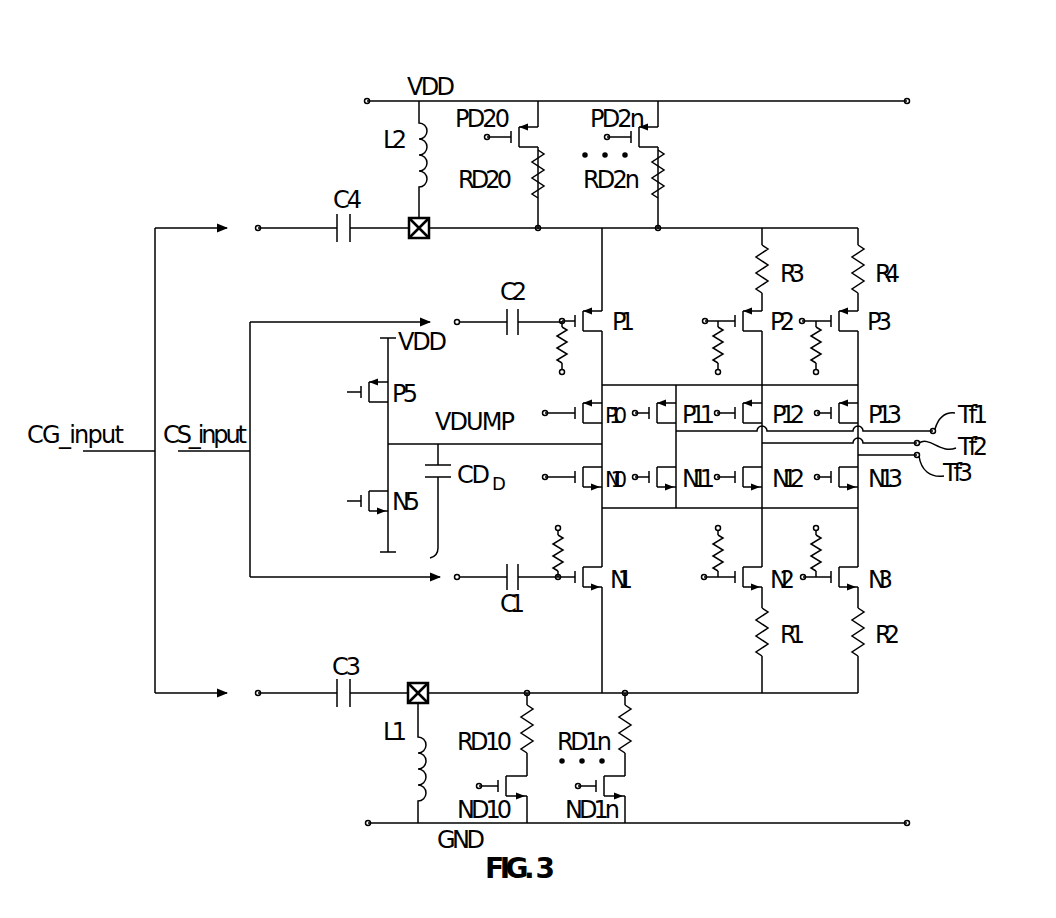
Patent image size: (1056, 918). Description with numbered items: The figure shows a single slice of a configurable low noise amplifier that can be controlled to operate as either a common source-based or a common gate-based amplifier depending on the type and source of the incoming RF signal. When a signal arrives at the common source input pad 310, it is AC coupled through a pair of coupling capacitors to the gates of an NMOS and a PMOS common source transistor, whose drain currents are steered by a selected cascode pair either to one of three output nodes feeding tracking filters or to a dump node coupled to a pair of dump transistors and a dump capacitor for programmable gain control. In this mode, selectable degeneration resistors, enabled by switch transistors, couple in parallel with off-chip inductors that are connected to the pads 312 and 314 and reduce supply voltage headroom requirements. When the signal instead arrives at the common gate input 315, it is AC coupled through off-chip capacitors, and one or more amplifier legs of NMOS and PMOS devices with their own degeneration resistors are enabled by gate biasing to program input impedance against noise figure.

The common source input pad 310 is at (222, 452).
The pad 312 is at (426, 682).
The pad 314 is at (426, 240).
The common gate input 315 is at (100, 452).